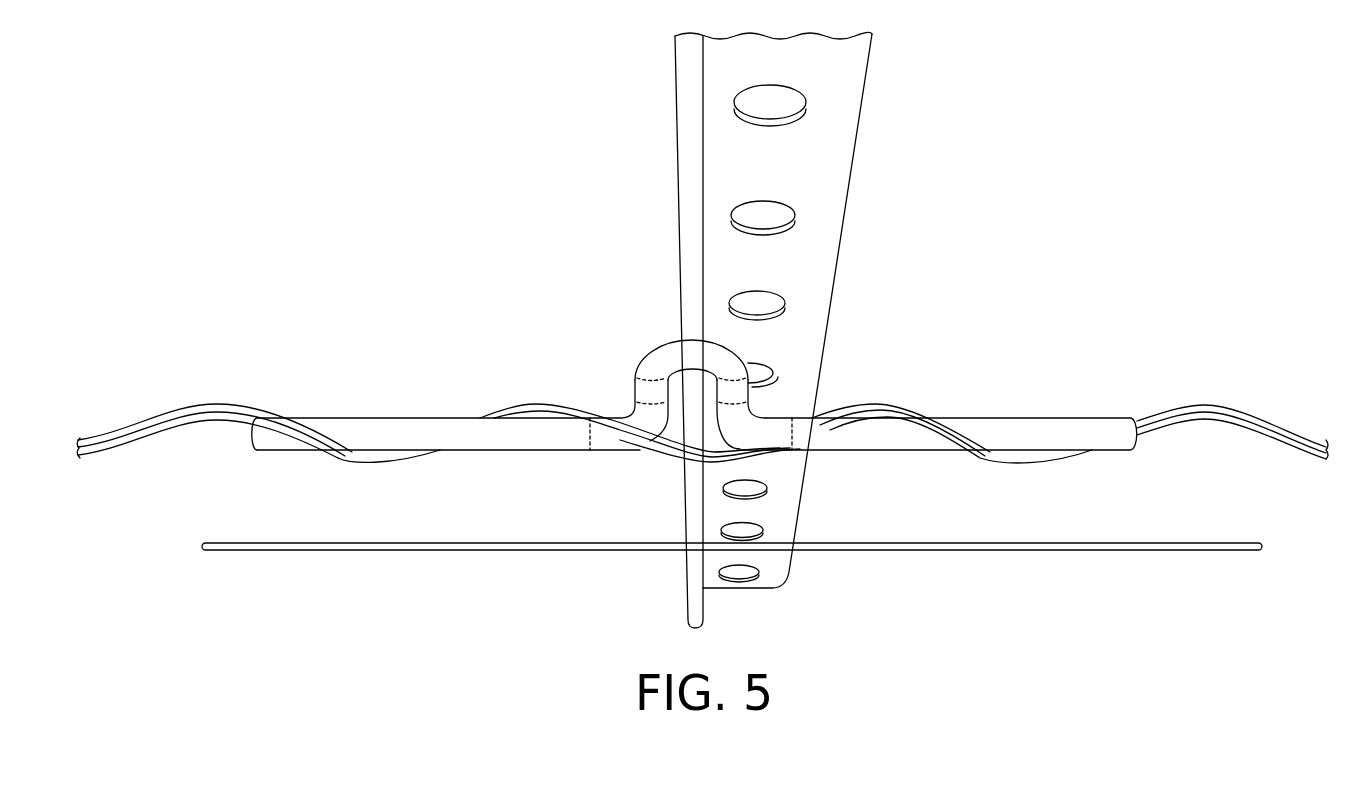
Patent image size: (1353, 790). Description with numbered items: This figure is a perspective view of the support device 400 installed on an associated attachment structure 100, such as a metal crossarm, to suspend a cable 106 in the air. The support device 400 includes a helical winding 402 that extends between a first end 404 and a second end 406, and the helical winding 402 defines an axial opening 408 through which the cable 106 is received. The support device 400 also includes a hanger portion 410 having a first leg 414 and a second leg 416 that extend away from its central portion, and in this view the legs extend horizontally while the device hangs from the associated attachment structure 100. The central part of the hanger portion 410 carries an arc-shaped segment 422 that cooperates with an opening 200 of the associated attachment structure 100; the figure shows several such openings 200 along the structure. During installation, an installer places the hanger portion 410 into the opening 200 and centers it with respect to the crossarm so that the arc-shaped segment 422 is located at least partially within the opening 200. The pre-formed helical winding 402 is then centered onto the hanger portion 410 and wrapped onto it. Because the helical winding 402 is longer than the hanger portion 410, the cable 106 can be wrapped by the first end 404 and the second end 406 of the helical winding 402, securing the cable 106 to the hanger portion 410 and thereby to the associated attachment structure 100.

The associated attachment structure 100 is at (868, 92).
The opening 200 is at (786, 208).
The cable 106 is at (370, 551).
The support device 400 is at (448, 296).
The helical winding 402 is at (701, 407).
The first end 404 is at (110, 436).
The second end 406 is at (1237, 407).
The axial opening 408 is at (229, 450).
The hanger portion 410 is at (626, 398).
The first leg 414 is at (348, 428).
The second leg 416 is at (1062, 428).
The arc-shaped segment 422 is at (660, 345).